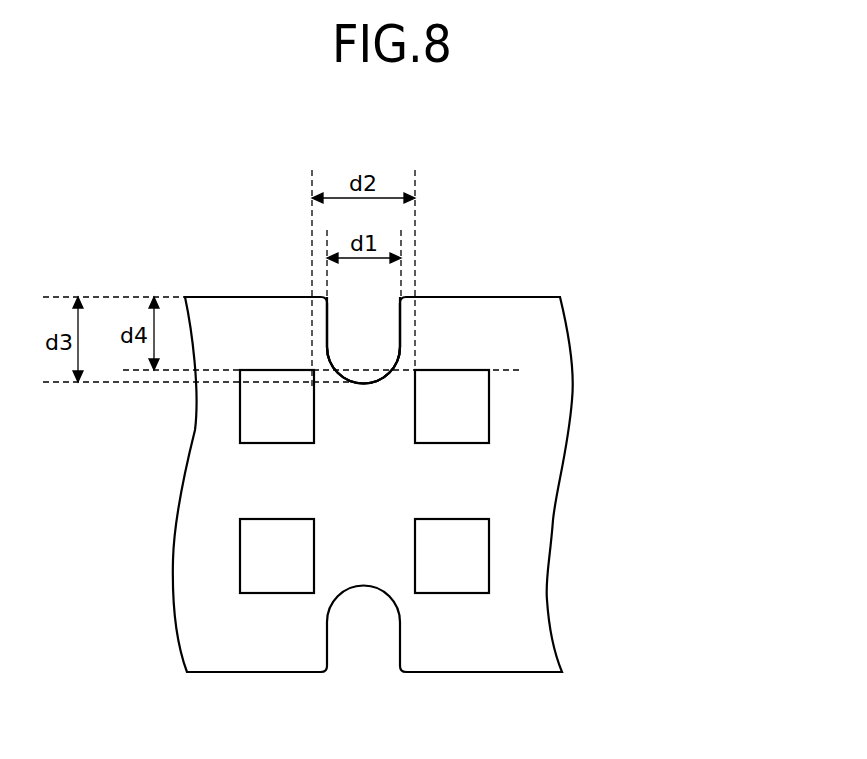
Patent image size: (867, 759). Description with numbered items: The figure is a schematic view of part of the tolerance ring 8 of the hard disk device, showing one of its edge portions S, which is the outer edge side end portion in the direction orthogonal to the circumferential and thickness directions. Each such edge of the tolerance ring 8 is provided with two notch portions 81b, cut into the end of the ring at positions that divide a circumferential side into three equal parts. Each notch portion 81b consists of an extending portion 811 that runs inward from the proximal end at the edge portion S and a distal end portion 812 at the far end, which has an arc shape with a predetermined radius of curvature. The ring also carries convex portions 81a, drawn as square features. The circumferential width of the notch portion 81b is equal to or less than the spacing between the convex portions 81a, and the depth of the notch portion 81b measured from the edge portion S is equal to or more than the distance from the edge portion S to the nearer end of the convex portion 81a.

The tolerance ring 8 is at (532, 233).
The edge portion S is at (478, 297).
The convex portion 81a is at (477, 405).
The notch portion 81b is at (645, 292).
The extending portion 811 is at (400, 330).
The distal end portion 812 is at (372, 385).